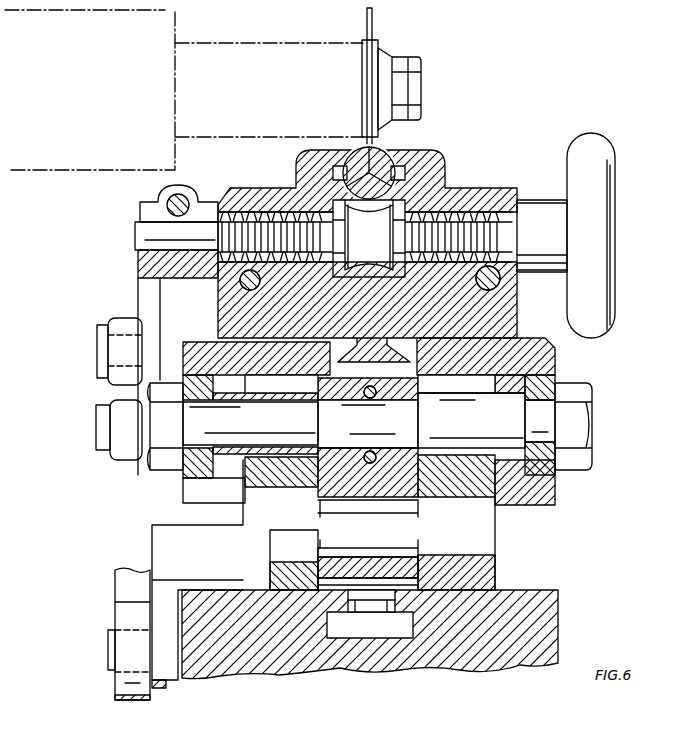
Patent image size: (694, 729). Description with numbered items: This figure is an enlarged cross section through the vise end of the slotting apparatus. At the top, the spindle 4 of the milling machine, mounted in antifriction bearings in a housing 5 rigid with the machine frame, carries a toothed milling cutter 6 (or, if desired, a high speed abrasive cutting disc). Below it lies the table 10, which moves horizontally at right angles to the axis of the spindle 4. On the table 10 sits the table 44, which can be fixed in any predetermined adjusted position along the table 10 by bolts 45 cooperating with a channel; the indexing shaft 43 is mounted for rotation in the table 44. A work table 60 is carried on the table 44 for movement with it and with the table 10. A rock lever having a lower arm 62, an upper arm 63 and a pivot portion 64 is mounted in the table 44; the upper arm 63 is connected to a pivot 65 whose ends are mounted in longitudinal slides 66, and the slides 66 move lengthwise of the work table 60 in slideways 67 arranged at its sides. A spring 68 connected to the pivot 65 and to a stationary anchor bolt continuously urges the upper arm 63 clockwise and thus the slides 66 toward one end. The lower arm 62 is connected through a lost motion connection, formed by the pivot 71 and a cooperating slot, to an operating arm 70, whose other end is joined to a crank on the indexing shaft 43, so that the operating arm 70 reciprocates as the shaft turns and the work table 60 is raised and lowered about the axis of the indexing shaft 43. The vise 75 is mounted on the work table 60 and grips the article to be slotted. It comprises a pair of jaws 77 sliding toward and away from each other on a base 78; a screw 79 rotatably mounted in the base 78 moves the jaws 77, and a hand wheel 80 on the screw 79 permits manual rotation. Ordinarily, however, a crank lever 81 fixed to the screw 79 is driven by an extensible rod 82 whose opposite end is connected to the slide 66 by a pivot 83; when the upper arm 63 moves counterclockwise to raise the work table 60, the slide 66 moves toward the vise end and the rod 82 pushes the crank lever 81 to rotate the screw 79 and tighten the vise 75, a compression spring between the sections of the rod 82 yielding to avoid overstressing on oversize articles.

The housing 5 is at (176, 17).
The spindle 4 is at (279, 48).
The toothed milling cutter 6 is at (374, 22).
The table 10 is at (552, 632).
The indexing shaft 43 is at (395, 721).
The table 44 is at (482, 581).
The bolts 45 is at (378, 612).
The work table 60 is at (532, 502).
The lower arm 62 is at (160, 690).
The upper arm 63 is at (378, 492).
The pivot portion 64 is at (304, 543).
The pivot 65 is at (397, 431).
The longitudinal slides 66 is at (196, 478).
The slideways 67 is at (183, 372).
The spring 68 is at (380, 392).
The operating arm 70 is at (122, 702).
The pivot 71 is at (110, 655).
The vise 75 is at (424, 152).
The jaws 77 is at (306, 166).
The base 78 is at (218, 314).
The screw 79 is at (254, 198).
The hand wheel 80 is at (602, 150).
The crank lever 81 is at (146, 290).
The extensible rod 82 is at (114, 392).
The pivot 83 is at (97, 428).